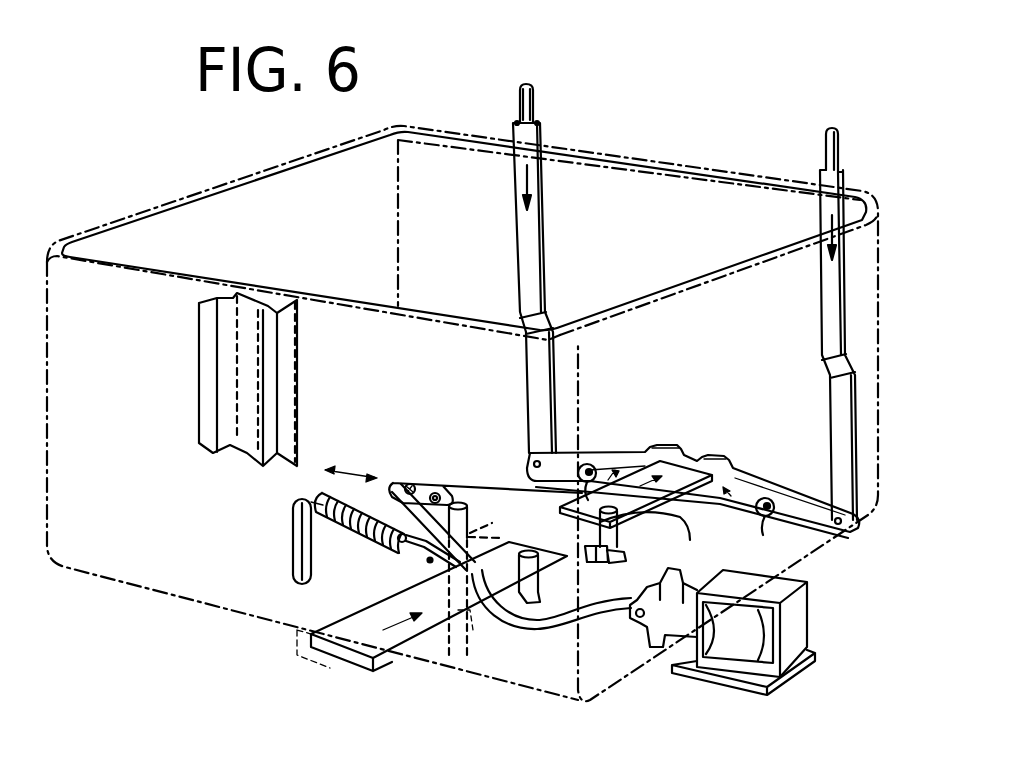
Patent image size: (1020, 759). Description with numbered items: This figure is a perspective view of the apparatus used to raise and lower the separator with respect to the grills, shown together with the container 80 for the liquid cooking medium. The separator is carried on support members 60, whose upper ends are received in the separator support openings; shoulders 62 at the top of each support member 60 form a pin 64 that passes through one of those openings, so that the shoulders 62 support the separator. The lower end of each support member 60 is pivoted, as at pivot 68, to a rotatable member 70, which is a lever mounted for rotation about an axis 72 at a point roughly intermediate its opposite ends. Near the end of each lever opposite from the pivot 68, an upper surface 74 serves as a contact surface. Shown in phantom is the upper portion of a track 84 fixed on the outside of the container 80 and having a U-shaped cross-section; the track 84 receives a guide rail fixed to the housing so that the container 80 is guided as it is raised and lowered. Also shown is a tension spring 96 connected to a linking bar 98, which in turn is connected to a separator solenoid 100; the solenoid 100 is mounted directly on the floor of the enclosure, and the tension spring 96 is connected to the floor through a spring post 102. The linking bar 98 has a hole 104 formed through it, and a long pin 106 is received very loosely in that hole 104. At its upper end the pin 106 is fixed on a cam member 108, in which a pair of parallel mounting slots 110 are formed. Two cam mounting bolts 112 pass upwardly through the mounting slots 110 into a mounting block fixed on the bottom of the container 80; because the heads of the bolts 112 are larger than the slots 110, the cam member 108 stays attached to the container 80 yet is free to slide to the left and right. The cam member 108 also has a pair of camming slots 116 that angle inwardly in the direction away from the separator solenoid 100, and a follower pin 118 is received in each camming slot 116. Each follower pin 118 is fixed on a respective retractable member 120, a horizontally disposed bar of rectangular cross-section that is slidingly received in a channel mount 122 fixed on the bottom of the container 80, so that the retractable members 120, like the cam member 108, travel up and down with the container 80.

The support member 60 is at (530, 275).
The shoulders 62 is at (518, 122).
The pin 64 is at (826, 145).
The pivot 68 is at (528, 460).
The rotatable member 70 is at (627, 455).
The axis 72 is at (592, 462).
The upper surface 74 is at (713, 455).
The container 80 is at (200, 203).
The track 84 is at (215, 385).
The tension spring 96 is at (372, 527).
The linking bar 98 is at (425, 560).
The separator solenoid 100 is at (735, 670).
The spring post 102 is at (292, 528).
The hole 104 is at (470, 538).
The long pin 106 is at (472, 607).
The cam member 108 is at (436, 482).
The mounting slots 110 is at (438, 496).
The cam mounting bolts 112 is at (410, 486).
The camming slots 116 is at (585, 613).
The follower pin 118 is at (521, 606).
The retractable member 120 is at (674, 492).
The channel mount 122 is at (330, 672).